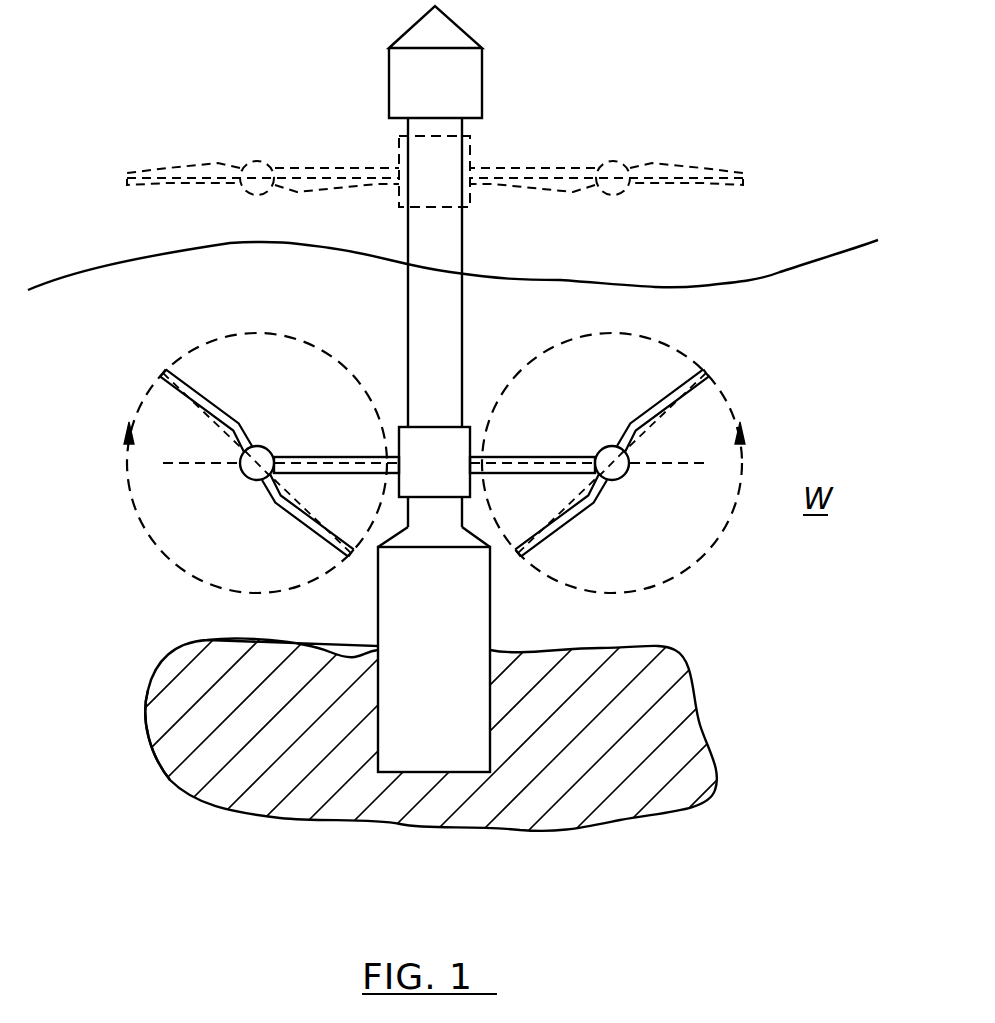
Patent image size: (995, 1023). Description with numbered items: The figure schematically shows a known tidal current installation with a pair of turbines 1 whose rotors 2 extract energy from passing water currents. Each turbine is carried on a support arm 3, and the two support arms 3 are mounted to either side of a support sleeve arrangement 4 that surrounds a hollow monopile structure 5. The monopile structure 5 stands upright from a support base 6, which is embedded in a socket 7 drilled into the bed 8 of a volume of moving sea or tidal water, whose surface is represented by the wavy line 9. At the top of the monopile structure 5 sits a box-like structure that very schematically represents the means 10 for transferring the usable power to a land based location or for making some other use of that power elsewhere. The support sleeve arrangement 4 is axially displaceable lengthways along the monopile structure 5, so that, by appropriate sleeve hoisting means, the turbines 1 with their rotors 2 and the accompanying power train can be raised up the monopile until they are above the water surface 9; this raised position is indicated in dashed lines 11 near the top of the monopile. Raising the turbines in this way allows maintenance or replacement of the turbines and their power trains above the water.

The turbine 1 is at (243, 478).
The rotor 2 is at (273, 502).
The support arm 3 is at (316, 457).
The support sleeve arrangement 4 is at (408, 437).
The hollow monopile structure 5 is at (440, 337).
The support base 6 is at (380, 600).
The socket 7 is at (372, 737).
The bed 8 is at (680, 692).
The surface 9 is at (773, 281).
The power transfer means 10 is at (393, 72).
The dashed lines 11 is at (203, 168).